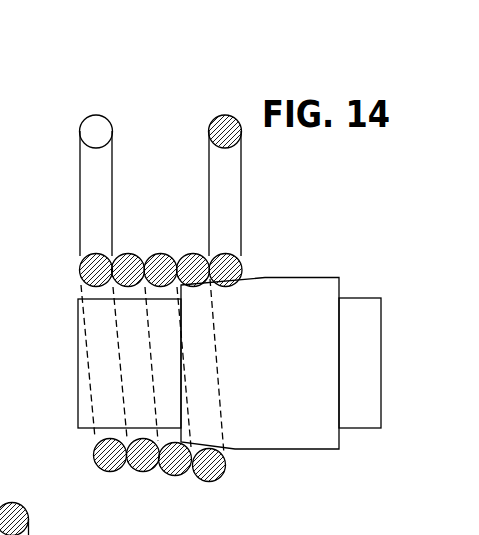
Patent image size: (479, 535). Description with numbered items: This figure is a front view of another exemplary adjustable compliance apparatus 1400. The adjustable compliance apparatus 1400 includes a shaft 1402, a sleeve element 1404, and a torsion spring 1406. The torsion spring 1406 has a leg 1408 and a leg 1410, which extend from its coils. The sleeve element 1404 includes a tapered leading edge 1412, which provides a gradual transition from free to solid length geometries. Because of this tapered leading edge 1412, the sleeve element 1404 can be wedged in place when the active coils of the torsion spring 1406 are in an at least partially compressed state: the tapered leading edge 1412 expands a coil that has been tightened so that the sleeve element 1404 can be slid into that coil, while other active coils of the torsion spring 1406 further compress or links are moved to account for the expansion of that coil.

The adjustable compliance apparatus 1400 is at (307, 203).
The shaft 1402 is at (382, 360).
The sleeve element 1404 is at (260, 277).
The torsion spring 1406 is at (188, 252).
The leg 1408 is at (80, 133).
The leg 1410 is at (208, 132).
The tapered leading edge 1412 is at (200, 387).